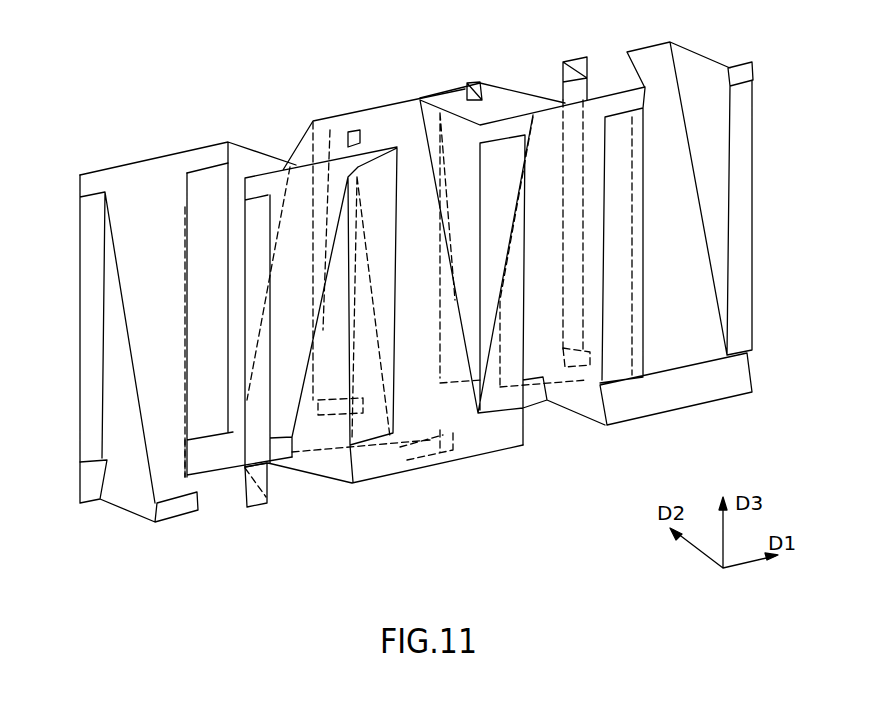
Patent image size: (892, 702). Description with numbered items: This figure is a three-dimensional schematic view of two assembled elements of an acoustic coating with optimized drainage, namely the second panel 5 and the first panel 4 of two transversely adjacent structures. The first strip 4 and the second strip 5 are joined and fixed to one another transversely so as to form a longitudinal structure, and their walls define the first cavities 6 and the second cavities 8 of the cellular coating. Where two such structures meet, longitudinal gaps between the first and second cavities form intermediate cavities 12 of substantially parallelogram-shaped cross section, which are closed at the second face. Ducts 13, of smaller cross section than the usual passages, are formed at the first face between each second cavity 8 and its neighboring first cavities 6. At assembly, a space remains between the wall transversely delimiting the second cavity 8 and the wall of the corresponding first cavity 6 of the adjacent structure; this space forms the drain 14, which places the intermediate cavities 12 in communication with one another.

The first strip 4 is at (713, 210).
The second strip 5 is at (145, 192).
The first cavity 6 is at (282, 143).
The second cavity 8 is at (563, 425).
The intermediate cavity 12 is at (370, 137).
The duct 13 is at (207, 155).
The drain 14 is at (275, 452).